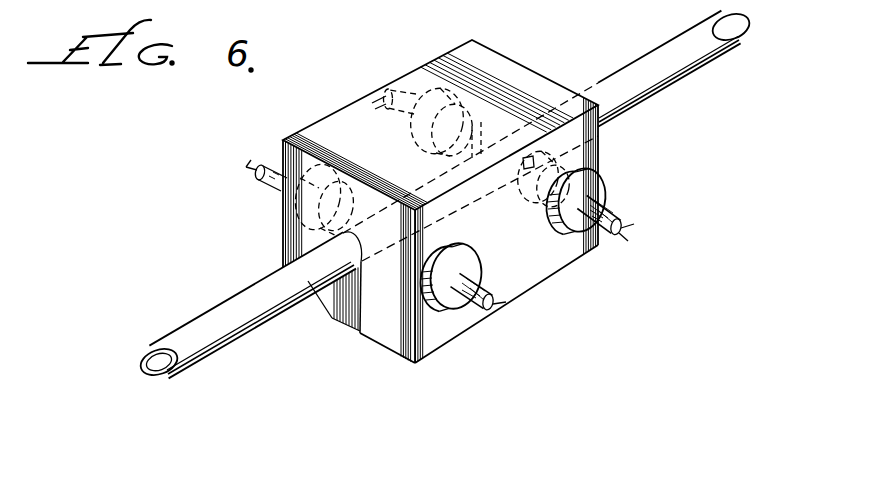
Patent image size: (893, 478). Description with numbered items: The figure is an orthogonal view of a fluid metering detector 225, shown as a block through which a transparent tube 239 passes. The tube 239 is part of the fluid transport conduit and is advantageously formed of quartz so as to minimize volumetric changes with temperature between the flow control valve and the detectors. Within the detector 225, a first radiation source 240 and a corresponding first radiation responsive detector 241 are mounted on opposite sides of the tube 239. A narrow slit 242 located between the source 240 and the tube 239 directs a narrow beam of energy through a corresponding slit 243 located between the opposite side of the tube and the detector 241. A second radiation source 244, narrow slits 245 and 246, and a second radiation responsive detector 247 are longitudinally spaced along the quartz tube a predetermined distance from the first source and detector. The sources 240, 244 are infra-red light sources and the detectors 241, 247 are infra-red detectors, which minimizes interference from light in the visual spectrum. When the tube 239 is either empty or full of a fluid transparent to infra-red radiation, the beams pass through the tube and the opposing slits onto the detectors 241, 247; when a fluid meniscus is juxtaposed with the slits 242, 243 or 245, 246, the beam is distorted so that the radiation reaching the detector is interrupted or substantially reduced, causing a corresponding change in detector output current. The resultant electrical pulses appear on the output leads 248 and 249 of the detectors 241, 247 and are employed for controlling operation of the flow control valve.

The detector 225 is at (521, 47).
The transparent tube 239 is at (238, 302).
The first radiation source 240 is at (291, 217).
The first radiation responsive detector 241 is at (461, 246).
The narrow slit 242 is at (378, 205).
The slit 243 is at (366, 255).
The second radiation source 244 is at (410, 94).
The narrow slit 245 is at (478, 134).
The narrow slit 246 is at (540, 157).
The second radiation responsive detector 247 is at (594, 180).
The output lead 248 is at (469, 305).
The output lead 249 is at (612, 213).